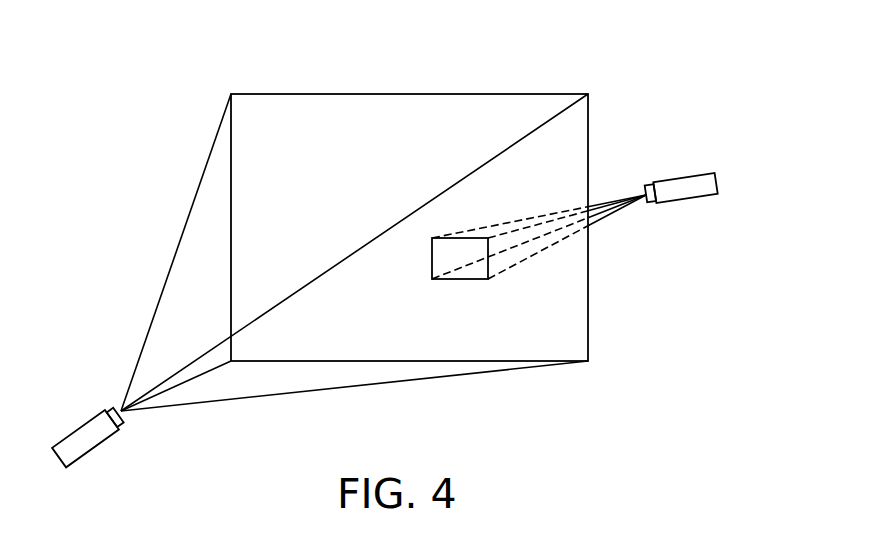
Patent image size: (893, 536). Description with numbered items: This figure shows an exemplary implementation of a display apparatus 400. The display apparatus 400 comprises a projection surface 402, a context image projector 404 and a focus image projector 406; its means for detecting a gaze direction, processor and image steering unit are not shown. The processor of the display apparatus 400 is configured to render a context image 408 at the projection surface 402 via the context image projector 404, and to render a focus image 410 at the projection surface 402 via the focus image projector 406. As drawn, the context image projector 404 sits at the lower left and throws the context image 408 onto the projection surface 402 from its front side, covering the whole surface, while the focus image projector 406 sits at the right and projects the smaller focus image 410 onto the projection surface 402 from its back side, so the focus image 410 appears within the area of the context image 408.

The display apparatus 400 is at (656, 35).
The projection surface 402 is at (588, 128).
The context image projector 404 is at (82, 423).
The focus image projector 406 is at (700, 172).
The context image 408 is at (428, 160).
The focus image 410 is at (468, 279).